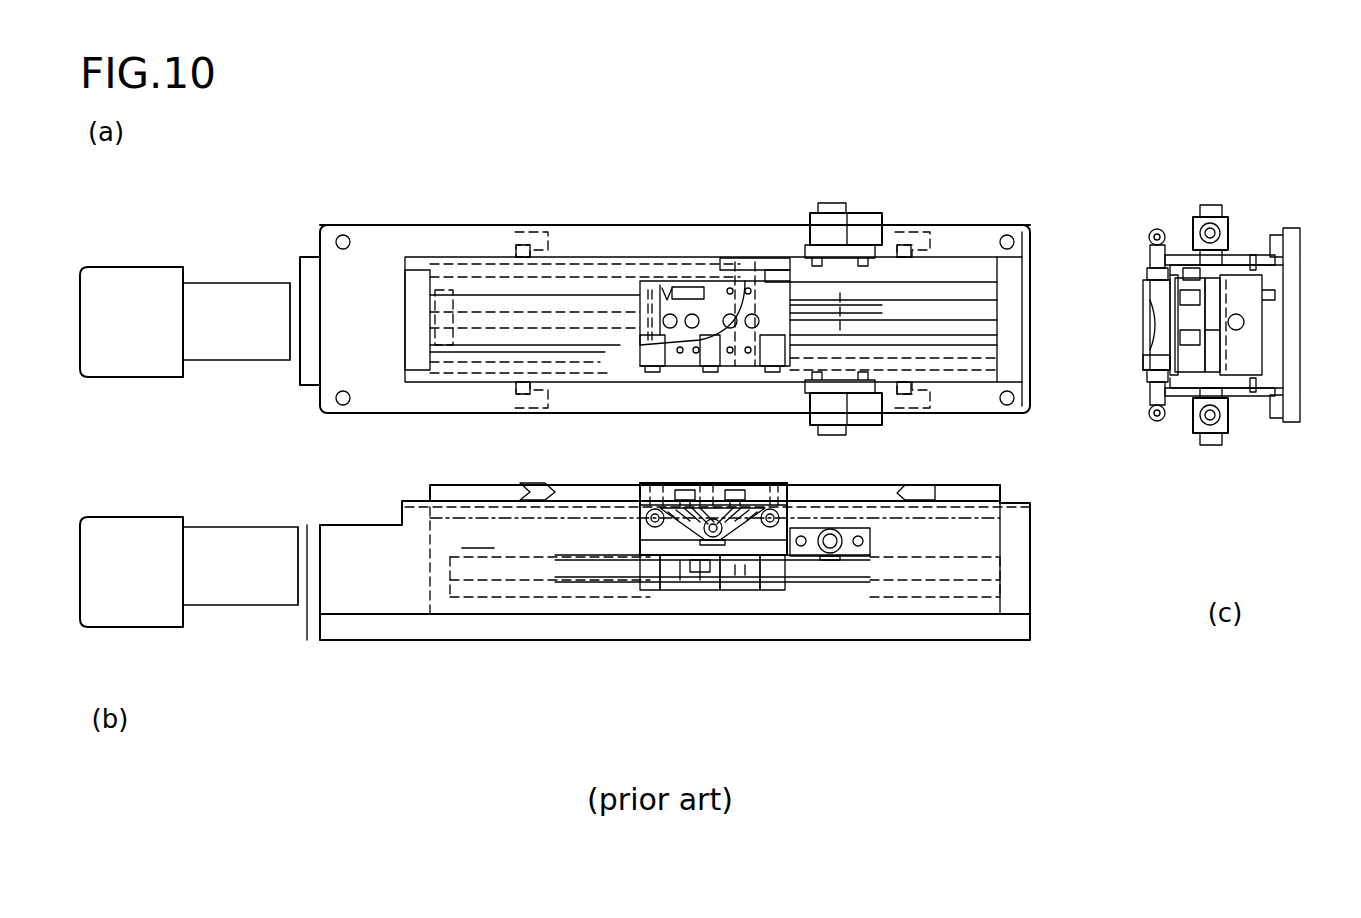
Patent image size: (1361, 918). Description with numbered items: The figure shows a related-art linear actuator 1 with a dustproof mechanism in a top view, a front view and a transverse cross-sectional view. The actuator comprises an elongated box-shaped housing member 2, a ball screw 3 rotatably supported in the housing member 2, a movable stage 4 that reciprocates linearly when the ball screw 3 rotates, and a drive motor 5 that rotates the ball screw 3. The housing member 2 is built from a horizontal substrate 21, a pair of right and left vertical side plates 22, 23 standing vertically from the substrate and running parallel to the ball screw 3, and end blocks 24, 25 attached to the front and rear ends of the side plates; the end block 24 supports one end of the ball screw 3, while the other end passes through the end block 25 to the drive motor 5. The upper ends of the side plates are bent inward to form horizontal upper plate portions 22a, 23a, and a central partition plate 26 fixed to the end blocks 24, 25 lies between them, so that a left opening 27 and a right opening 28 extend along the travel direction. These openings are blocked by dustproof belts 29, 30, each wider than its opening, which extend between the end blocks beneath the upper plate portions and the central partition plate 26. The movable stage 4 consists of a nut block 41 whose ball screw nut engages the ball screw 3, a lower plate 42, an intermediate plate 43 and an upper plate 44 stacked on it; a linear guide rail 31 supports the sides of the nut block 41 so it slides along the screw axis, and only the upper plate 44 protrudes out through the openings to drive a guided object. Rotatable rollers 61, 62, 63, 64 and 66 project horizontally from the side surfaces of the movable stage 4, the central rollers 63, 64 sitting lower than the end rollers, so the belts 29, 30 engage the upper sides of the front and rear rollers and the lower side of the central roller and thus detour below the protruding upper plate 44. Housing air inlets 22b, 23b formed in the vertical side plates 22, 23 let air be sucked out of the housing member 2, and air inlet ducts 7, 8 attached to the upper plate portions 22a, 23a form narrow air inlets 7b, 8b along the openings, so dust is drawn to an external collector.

The linear actuator 1 is at (625, 155).
The housing member 2 is at (400, 224).
The ball screw 3 is at (847, 305).
The movable stage 4 is at (655, 290).
The drive motor 5 is at (135, 268).
The air inlet duct 7 is at (1150, 275).
The air inlet 7b is at (1148, 288).
The air inlet duct 8 is at (1148, 410).
The air inlet 8b is at (1148, 378).
The horizontal substrate 21 is at (915, 628).
The vertical side plate 22 is at (750, 270).
The horizontal upper plate portion 22a is at (978, 232).
The housing air inlet 22b is at (842, 270).
The vertical side plate 23 is at (610, 370).
The horizontal upper plate portion 23a is at (970, 390).
The housing air inlet 23b is at (830, 372).
The end block 24 is at (1013, 340).
The end block 25 is at (338, 360).
The central partition plate 26 is at (470, 305).
The left opening 27 is at (500, 285).
The right opening 28 is at (495, 345).
The dustproof belt 29 is at (775, 275).
The dustproof belt 30 is at (800, 385).
The linear guide rail 31 is at (1262, 278).
The nut block 41 is at (725, 570).
The lower plate 42 is at (700, 575).
The intermediate plate 43 is at (690, 560).
The upper plate 44 is at (665, 550).
The roller 61 is at (730, 258).
The roller 62 is at (790, 352).
The central roller 63 is at (1182, 300).
The central roller 64 is at (700, 366).
The roller 66 is at (645, 345).